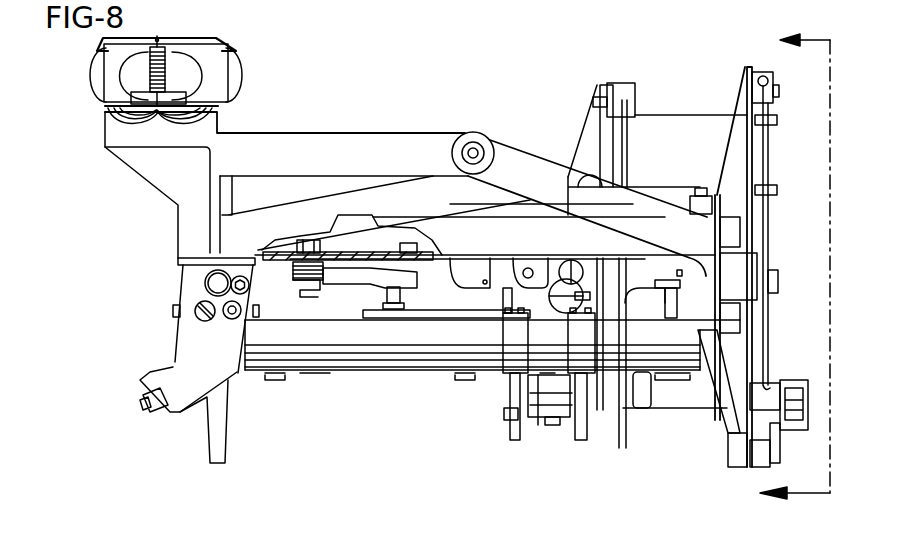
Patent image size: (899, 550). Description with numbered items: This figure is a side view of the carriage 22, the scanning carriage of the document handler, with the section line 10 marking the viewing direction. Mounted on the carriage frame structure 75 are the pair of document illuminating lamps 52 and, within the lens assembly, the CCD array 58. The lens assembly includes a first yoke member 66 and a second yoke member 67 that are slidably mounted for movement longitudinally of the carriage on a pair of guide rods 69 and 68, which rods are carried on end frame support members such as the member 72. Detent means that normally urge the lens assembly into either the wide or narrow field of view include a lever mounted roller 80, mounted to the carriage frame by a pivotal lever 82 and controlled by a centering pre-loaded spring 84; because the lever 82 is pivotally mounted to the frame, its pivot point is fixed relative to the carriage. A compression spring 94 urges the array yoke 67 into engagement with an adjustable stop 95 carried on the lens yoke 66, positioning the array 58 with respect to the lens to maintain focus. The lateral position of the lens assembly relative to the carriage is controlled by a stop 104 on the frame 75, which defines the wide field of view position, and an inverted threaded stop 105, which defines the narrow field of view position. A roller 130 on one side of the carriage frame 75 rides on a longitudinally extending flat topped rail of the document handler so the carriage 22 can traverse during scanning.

The apparatus section line 10 is at (781, 269).
The carriage 22 is at (146, 262).
The document illuminating lamps 52 is at (97, 75).
The CCD array 58 is at (583, 437).
The first yoke member 66 is at (410, 319).
The second yoke member 67 is at (643, 381).
The guide rod 68 is at (557, 418).
The guide rod 69 is at (348, 358).
The end frame support member 72 is at (708, 387).
The carriage frame structure 75 is at (287, 133).
The lever mounted roller 80 is at (390, 306).
The pivotal lever 82 is at (358, 287).
The centering pre-loaded spring 84 is at (340, 292).
The compression spring 94 is at (637, 303).
The adjustable stop 95 is at (693, 303).
The stop 104 is at (198, 302).
The inverted threaded stop 105 is at (234, 320).
The roller 130 is at (474, 131).